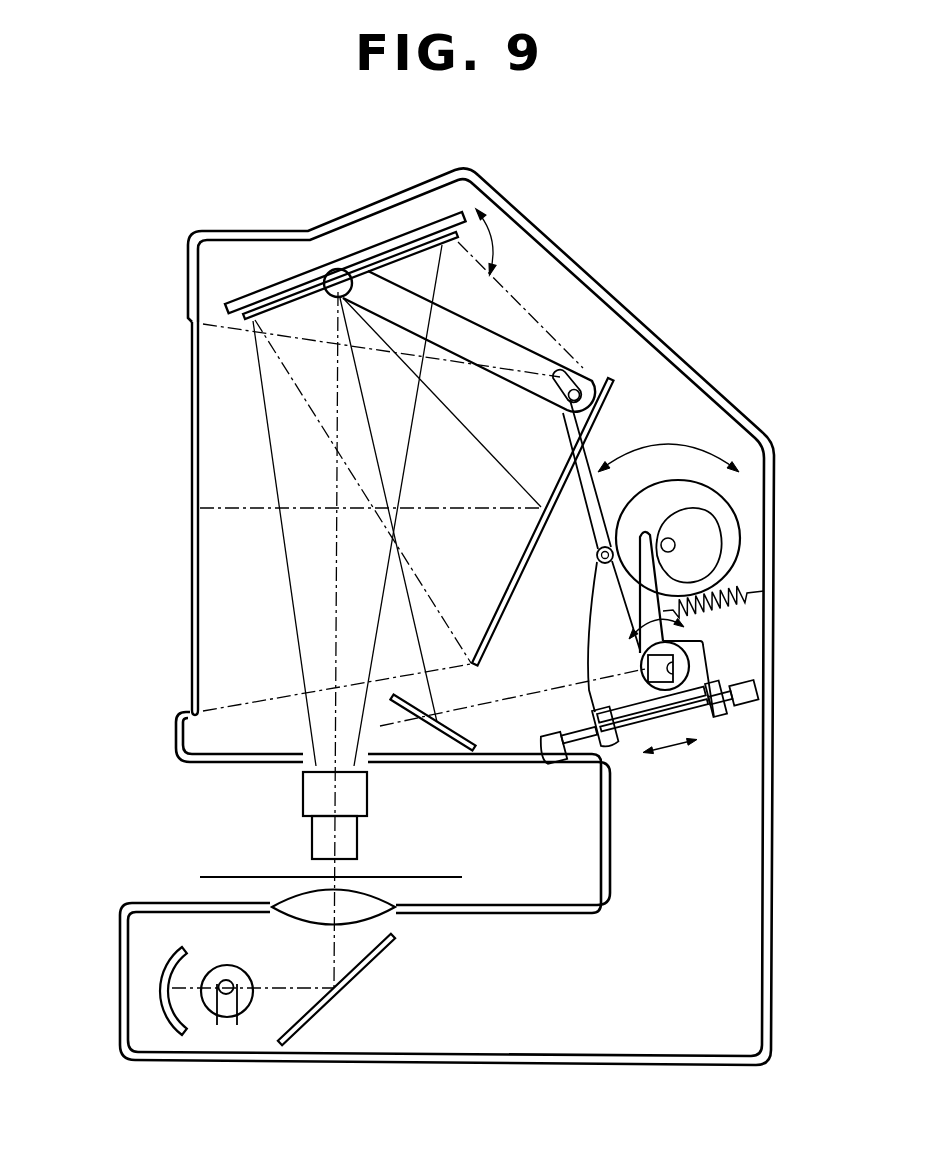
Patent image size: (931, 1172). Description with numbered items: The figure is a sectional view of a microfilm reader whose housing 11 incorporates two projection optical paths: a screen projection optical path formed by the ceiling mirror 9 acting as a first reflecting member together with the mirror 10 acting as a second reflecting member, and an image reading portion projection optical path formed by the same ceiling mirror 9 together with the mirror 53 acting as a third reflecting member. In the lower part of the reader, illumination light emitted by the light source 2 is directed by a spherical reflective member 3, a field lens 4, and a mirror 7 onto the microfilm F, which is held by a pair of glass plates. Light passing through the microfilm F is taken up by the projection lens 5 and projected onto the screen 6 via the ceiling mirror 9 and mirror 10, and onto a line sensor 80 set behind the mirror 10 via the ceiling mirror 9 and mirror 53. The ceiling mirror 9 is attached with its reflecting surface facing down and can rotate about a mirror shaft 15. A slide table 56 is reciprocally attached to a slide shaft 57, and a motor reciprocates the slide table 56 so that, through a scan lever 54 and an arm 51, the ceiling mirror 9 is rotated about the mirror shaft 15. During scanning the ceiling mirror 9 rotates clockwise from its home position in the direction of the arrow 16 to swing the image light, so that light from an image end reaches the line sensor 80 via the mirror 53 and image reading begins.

The light source 2 is at (226, 994).
The spherical reflective member 3 is at (160, 991).
The field lens 4 is at (378, 907).
The projection lens 5 is at (303, 840).
The screen 6 is at (192, 404).
The mirror 7 is at (353, 970).
The ceiling mirror 9 is at (390, 262).
The mirror 10 is at (526, 547).
The housing 11 is at (743, 421).
The mirror shaft 15 is at (333, 273).
The arrow 16 is at (492, 230).
The arm 51 is at (436, 231).
The mirror 53 is at (450, 739).
The scan lever 54 is at (617, 433).
The slide table 56 is at (612, 702).
The slide shaft 57 is at (727, 710).
The line sensor 80 is at (668, 668).
The microfilm F is at (213, 877).